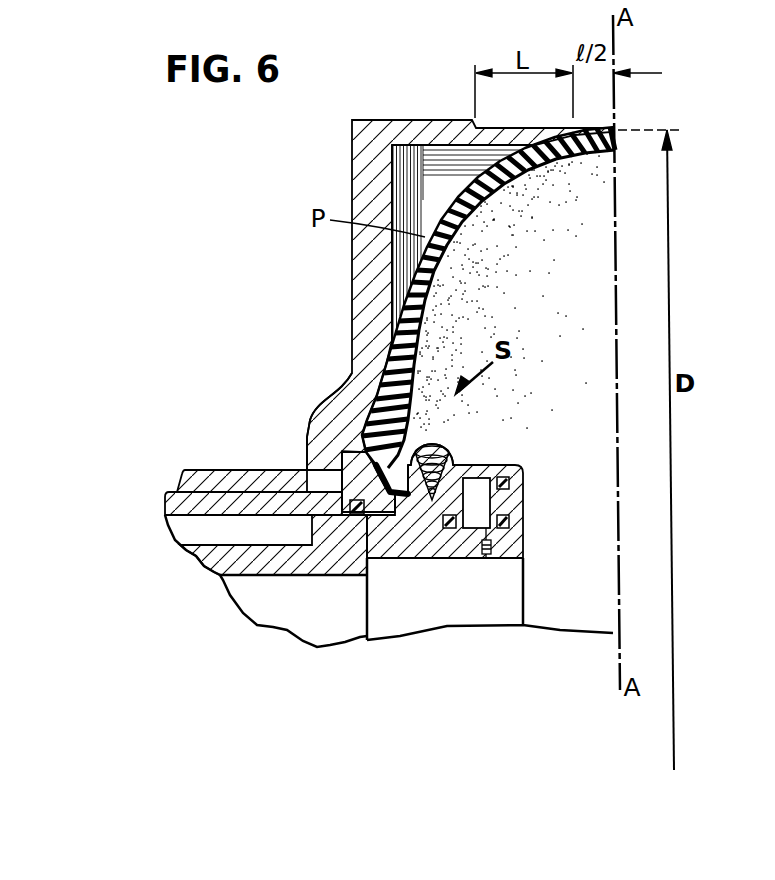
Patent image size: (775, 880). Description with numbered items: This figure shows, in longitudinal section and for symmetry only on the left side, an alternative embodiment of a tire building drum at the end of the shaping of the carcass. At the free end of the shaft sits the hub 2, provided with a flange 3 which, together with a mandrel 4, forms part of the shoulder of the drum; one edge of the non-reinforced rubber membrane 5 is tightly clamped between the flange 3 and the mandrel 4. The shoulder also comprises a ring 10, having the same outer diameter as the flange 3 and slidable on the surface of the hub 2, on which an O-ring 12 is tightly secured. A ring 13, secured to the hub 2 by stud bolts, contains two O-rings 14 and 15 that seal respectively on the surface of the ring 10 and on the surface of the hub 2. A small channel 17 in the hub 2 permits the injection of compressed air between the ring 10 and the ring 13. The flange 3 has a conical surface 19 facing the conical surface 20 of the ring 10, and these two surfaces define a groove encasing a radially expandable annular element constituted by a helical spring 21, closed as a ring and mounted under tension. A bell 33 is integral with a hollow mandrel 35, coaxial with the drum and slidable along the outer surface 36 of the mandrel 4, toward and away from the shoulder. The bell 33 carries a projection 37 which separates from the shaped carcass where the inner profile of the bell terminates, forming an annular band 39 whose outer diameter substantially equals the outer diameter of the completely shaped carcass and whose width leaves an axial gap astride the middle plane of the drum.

The hub 2 is at (340, 558).
The flange 3 is at (417, 485).
The mandrel 4 is at (345, 452).
The non-reinforced rubber membrane 5 is at (460, 225).
The ring 10 is at (460, 470).
The O-ring 12 is at (449, 528).
The ring 13 is at (512, 505).
The O-ring 14 is at (510, 483).
The O-ring 15 is at (512, 522).
The small channel 17 is at (486, 556).
The conical surface 19 is at (434, 445).
The conical surface 20 is at (455, 460).
The helical spring 21 is at (446, 440).
The bell 33 is at (345, 398).
The hollow mandrel 35 is at (214, 470).
The outer surface 36 is at (183, 490).
The projection 37 is at (370, 268).
The annular band 39 is at (520, 127).